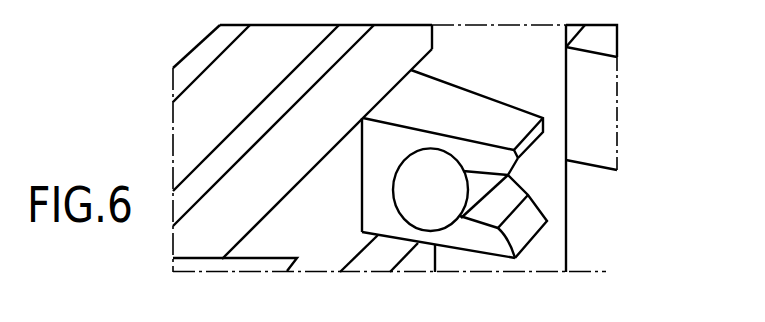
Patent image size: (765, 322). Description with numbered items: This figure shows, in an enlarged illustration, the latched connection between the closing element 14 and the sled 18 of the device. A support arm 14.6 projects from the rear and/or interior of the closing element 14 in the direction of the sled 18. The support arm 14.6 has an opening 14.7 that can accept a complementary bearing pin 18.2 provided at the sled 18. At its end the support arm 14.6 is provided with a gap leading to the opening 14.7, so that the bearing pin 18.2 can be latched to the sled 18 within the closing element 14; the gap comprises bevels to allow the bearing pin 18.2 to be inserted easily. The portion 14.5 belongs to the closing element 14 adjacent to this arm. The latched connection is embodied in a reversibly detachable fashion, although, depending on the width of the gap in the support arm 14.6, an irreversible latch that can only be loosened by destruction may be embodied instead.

The closing element 14 is at (217, 100).
The support web 14.5 is at (465, 256).
The support arm 14.6 is at (470, 117).
The opening 14.7 is at (518, 166).
The sled 18 is at (395, 45).
The bearing pin 18.2 is at (428, 197).